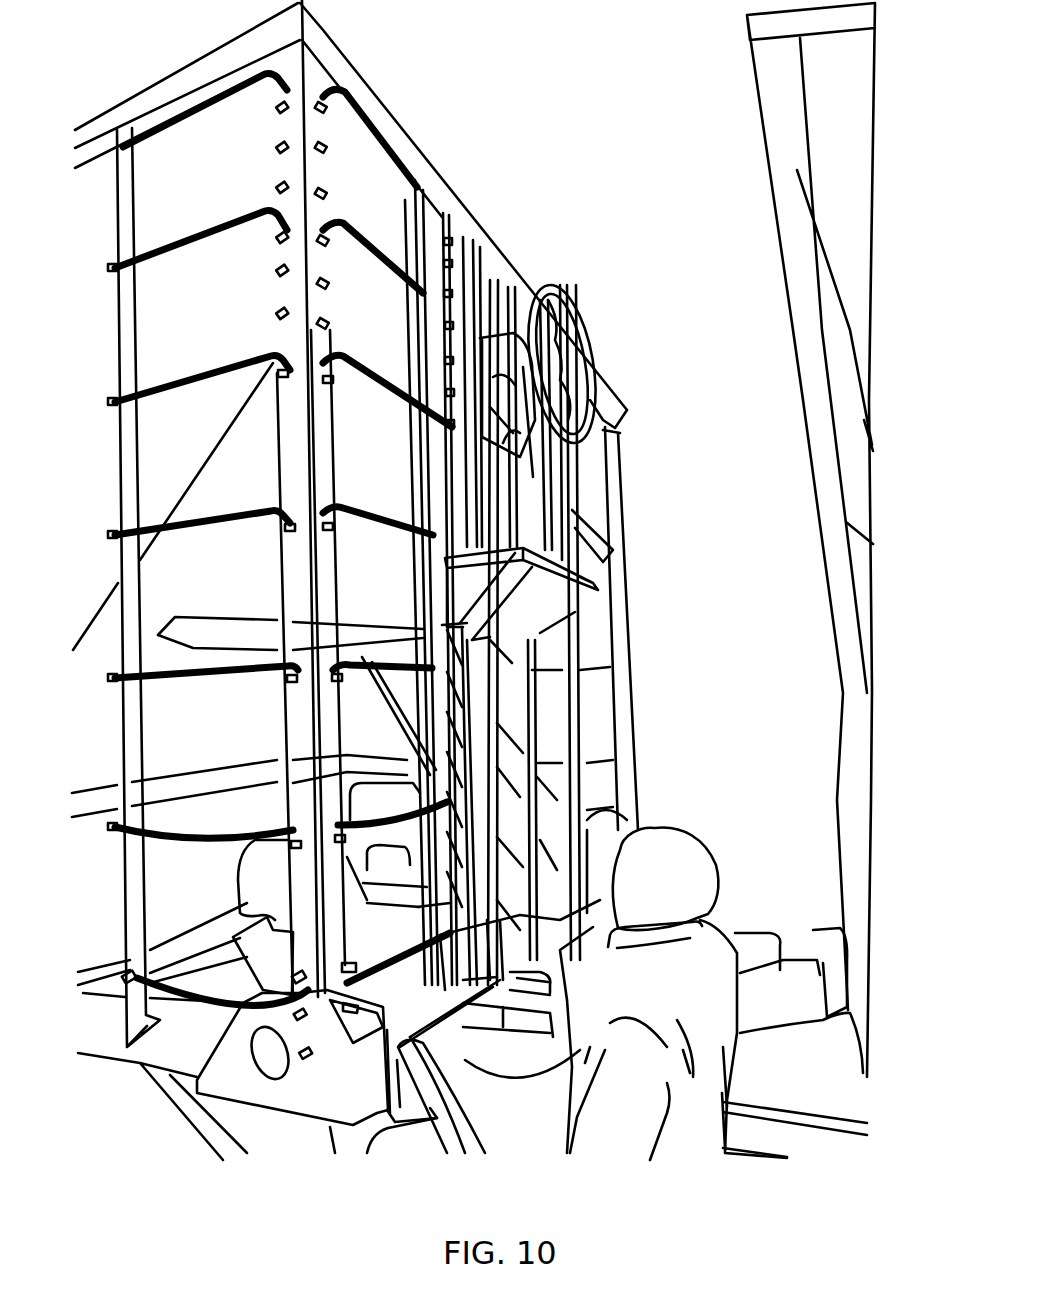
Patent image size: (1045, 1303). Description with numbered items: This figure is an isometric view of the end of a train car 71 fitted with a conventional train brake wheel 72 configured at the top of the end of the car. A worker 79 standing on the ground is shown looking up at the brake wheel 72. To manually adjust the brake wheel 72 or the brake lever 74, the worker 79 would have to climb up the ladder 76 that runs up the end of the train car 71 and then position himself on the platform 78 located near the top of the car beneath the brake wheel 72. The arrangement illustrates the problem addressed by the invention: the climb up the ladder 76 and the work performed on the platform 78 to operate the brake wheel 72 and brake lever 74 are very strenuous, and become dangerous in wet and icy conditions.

The train car 71 is at (443, 220).
The train brake wheel 72 is at (567, 300).
The brake lever 74 is at (607, 407).
The ladder 76 is at (393, 140).
The platform 78 is at (593, 575).
The worker 79 is at (673, 870).